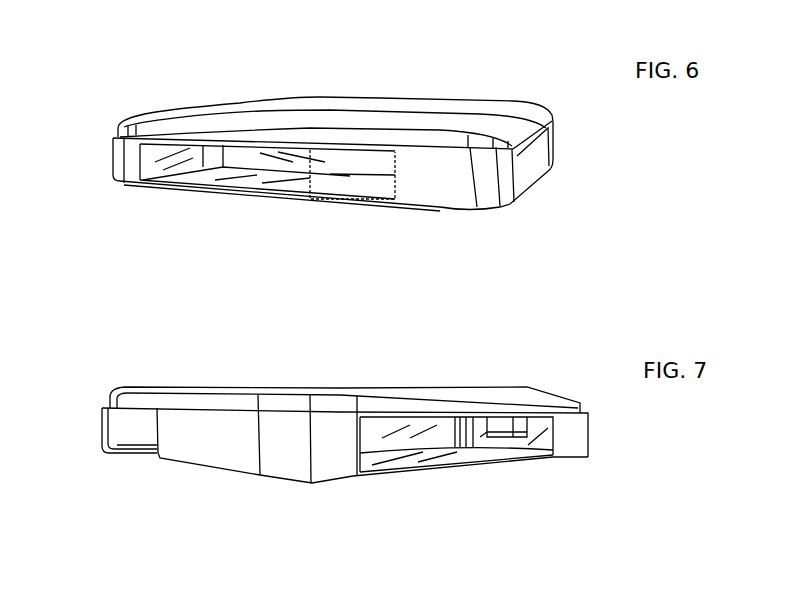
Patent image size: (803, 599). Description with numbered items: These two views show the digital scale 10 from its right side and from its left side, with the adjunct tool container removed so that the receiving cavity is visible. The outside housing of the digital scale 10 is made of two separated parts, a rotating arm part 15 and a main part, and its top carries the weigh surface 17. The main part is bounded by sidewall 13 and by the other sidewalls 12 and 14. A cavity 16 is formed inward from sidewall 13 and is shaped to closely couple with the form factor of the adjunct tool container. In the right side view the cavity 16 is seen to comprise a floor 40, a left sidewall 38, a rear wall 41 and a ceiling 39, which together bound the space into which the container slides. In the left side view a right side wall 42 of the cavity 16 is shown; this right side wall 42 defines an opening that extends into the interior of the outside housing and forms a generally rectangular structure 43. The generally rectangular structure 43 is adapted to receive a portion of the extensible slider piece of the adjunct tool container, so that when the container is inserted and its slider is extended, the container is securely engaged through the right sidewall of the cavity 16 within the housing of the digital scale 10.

In FIG. 6, the digital scale 10 is at (322, 189).
In FIG. 7, the digital scale 10 is at (338, 438).
In FIG. 6, the sidewall 12 is at (536, 172).
In FIG. 6, the sidewall 13 is at (443, 205).
In FIG. 7, the sidewall 13 is at (349, 476).
In FIG. 7, the sidewall 14 is at (202, 456).
In FIG. 7, the rotating arm part 15 is at (113, 453).
In FIG. 6, the cavity 16 is at (179, 187).
In FIG. 7, the cavity 16 is at (465, 461).
In FIG. 6, the weigh surface 17 is at (280, 107).
In FIG. 7, the weigh surface 17 is at (202, 386).
In FIG. 6, the left sidewall 38 is at (155, 163).
In FIG. 6, the ceiling 39 is at (272, 148).
In FIG. 6, the floor 40 is at (295, 185).
In FIG. 7, the floor 40 is at (412, 467).
In FIG. 6, the rear wall 41 is at (362, 165).
In FIG. 7, the rear wall 41 is at (372, 438).
In FIG. 7, the right side wall 42 is at (547, 440).
In FIG. 7, the generally rectangular structure 43 is at (511, 434).